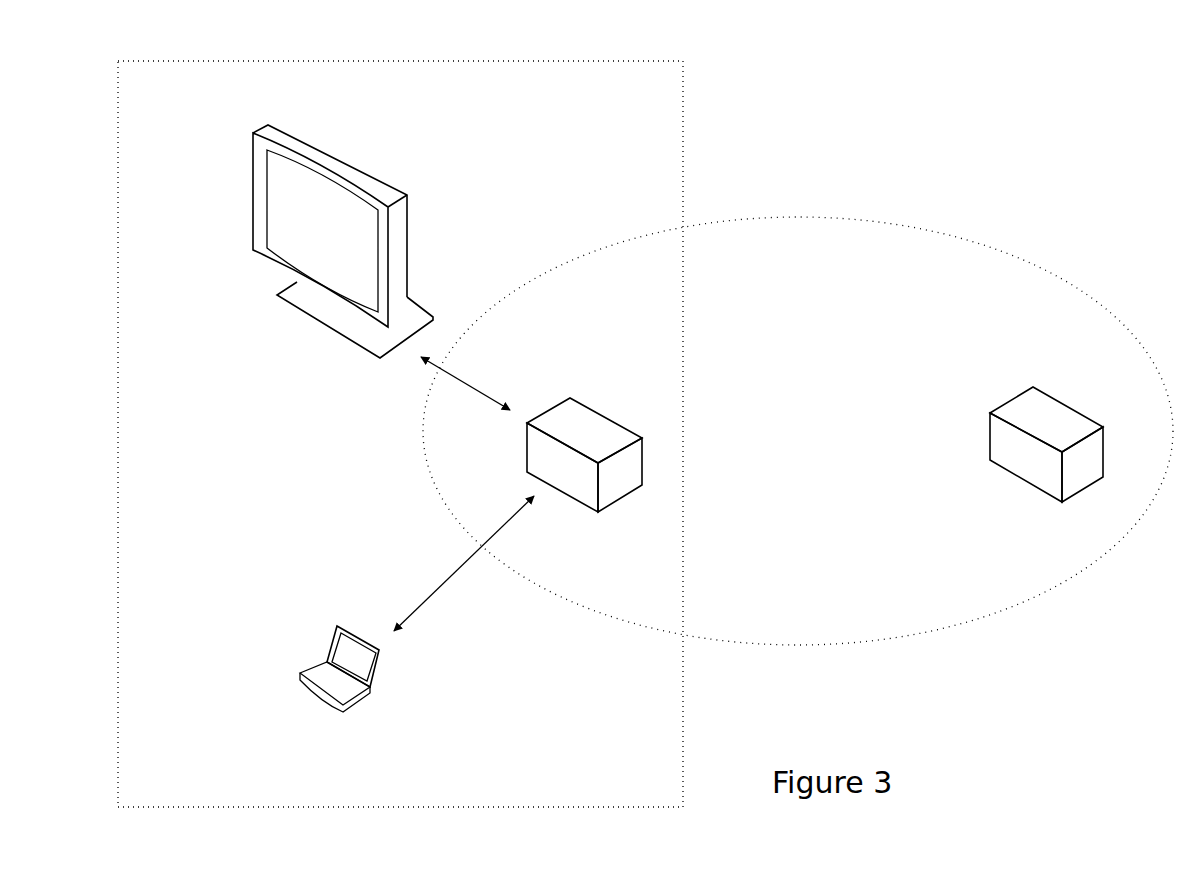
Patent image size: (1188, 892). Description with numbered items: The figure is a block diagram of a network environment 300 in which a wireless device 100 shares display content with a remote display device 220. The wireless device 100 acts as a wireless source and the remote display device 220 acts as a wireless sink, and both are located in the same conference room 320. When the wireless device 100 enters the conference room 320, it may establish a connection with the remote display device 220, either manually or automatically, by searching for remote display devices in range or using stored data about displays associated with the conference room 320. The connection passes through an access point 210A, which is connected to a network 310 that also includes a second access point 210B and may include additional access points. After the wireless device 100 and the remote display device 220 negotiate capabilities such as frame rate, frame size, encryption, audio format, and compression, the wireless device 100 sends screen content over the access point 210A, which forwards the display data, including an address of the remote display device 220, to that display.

The wireless device 100 is at (311, 618).
The remote display device 220 is at (275, 118).
The access point 210A is at (551, 392).
The access point 210B is at (979, 392).
The network environment 300 is at (1005, 119).
The network 310 is at (798, 431).
The conference room 320 is at (400, 434).